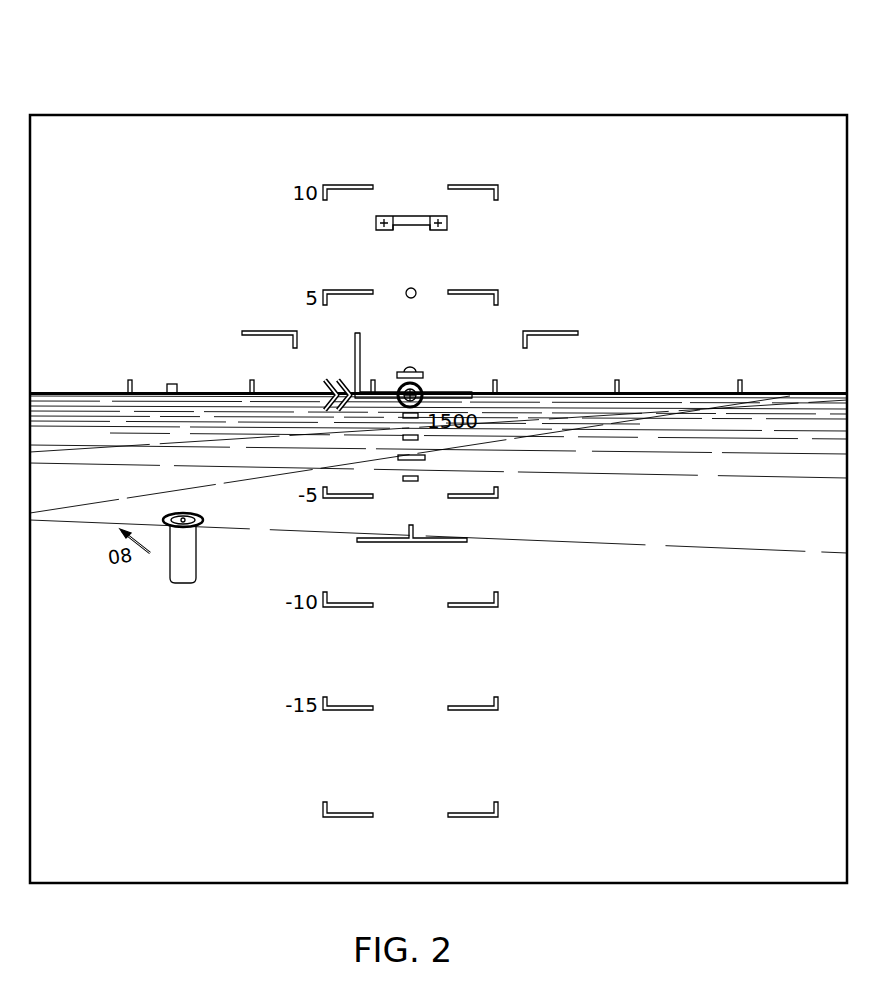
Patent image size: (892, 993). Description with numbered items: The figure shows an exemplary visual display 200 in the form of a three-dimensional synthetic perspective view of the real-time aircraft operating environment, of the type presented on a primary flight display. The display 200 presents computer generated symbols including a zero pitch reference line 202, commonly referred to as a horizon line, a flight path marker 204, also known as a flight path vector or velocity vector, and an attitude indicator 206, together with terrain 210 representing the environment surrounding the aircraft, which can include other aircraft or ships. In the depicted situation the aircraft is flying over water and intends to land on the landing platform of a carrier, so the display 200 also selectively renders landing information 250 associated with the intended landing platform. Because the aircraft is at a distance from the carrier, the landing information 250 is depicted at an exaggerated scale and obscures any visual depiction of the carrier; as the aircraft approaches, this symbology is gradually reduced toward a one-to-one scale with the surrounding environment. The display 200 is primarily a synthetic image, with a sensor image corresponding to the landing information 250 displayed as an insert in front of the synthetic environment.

The visual display 200 is at (438, 444).
The zero pitch reference line 202 is at (682, 392).
The flight path marker 204 is at (452, 390).
The attitude indicator 206 is at (351, 185).
The terrain 210 is at (137, 642).
The landing information 250 is at (147, 505).